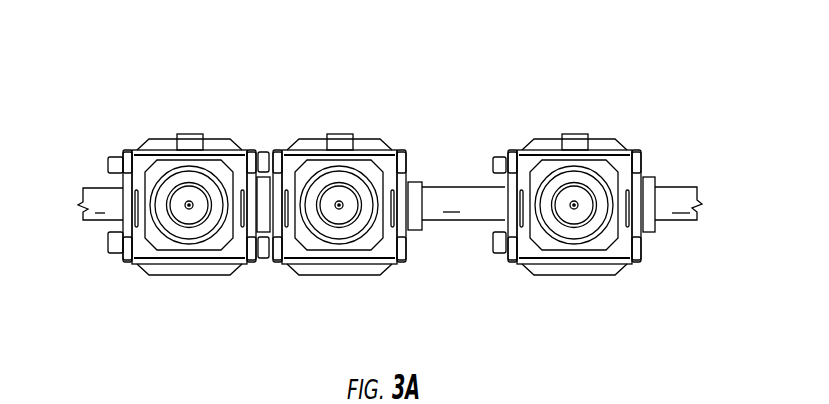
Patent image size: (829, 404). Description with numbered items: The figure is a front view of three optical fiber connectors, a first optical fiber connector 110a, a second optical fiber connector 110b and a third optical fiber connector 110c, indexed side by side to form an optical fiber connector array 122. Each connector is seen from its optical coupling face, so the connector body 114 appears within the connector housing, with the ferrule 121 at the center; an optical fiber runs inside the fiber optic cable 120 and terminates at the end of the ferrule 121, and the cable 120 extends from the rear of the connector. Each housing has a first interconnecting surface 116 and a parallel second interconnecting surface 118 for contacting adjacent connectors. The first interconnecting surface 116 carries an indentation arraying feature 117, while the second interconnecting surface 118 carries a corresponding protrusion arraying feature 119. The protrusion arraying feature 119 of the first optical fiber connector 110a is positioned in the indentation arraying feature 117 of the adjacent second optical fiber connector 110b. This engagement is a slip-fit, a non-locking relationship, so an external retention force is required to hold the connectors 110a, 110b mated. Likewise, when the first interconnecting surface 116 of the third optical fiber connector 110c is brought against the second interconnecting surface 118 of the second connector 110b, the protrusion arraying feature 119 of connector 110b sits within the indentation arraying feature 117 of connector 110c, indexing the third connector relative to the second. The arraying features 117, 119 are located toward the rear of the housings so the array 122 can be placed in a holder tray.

The first optical fiber connector 110a is at (115, 106).
The second optical fiber connector 110b is at (334, 102).
The third optical fiber connector 110c is at (565, 110).
The connector body 114 is at (215, 243).
The first interconnecting surface 116 is at (105, 248).
The indentation arraying feature 117 is at (112, 177).
The second interconnecting surface 118 is at (258, 260).
The protrusion arraying feature 119 is at (268, 178).
The fiber optic cable 120 is at (679, 222).
The ferrule 121 is at (188, 217).
The optical fiber connector array 122 is at (233, 348).